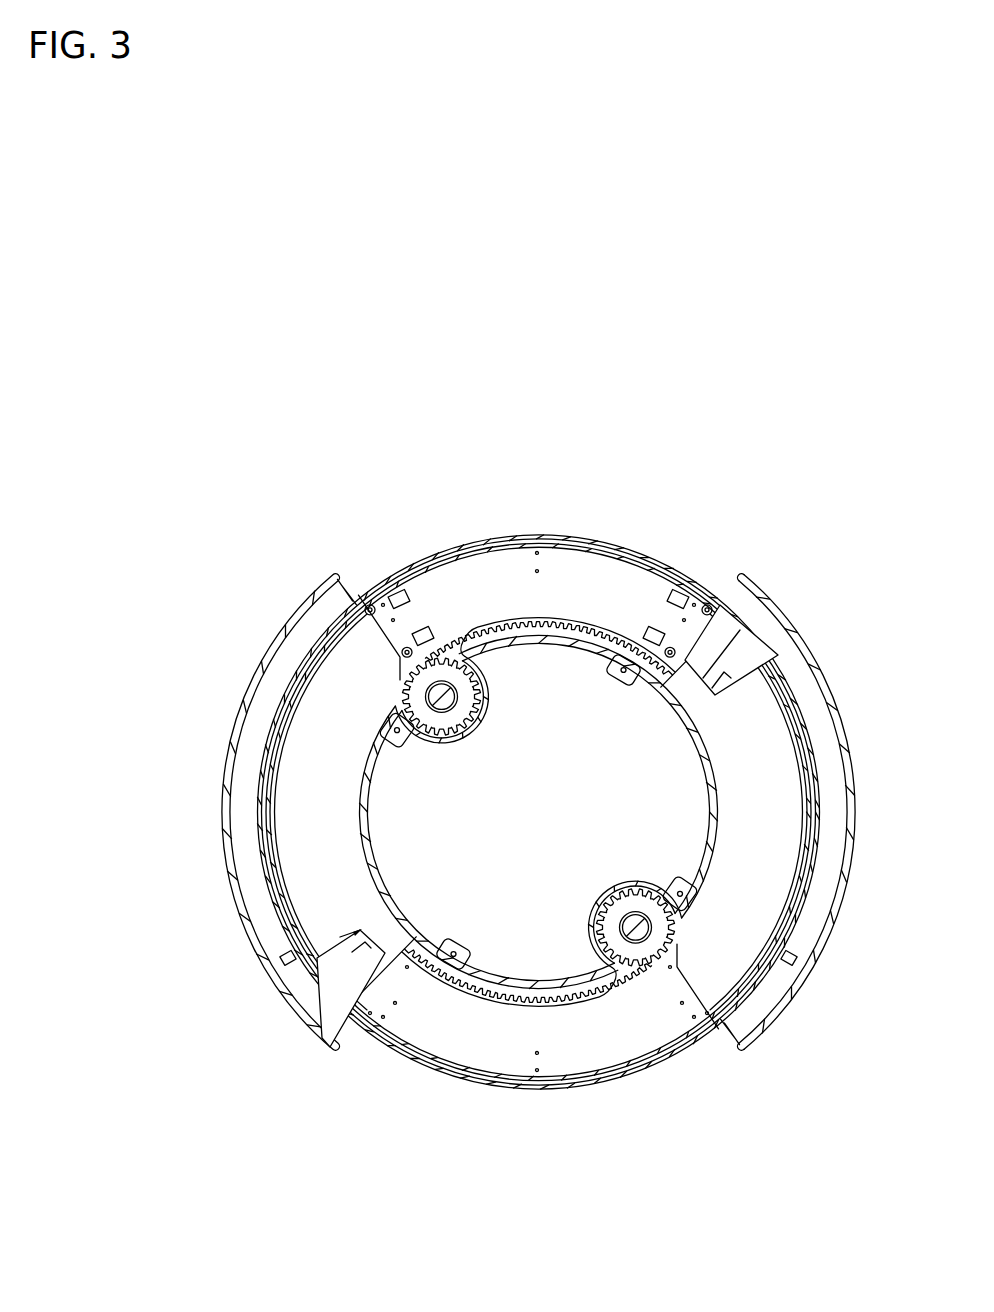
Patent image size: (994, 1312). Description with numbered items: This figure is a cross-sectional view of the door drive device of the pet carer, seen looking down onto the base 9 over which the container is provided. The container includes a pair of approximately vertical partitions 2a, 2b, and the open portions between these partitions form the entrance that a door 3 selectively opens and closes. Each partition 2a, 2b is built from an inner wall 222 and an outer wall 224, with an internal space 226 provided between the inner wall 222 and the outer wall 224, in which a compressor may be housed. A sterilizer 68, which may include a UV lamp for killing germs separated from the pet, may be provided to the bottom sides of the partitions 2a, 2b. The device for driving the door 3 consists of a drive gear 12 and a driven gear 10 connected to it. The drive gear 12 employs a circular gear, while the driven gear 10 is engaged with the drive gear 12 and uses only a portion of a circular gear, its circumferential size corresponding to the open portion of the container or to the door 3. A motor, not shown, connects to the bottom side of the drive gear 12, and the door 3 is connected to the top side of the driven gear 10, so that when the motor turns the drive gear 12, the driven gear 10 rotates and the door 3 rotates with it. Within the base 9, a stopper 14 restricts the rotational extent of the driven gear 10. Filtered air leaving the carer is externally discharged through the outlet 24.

The partition 2a is at (268, 630).
The partition 2b is at (831, 812).
The door 3 is at (537, 1088).
The base 9 is at (545, 850).
The driven gear 10 is at (610, 1030).
The drive gear 12 is at (662, 934).
The stopper 14 is at (722, 692).
The outlet 24 is at (455, 1092).
The sterilizer 68 is at (283, 960).
The inner wall 222 is at (800, 722).
The outer wall 224 is at (850, 760).
The internal space 226 is at (825, 740).